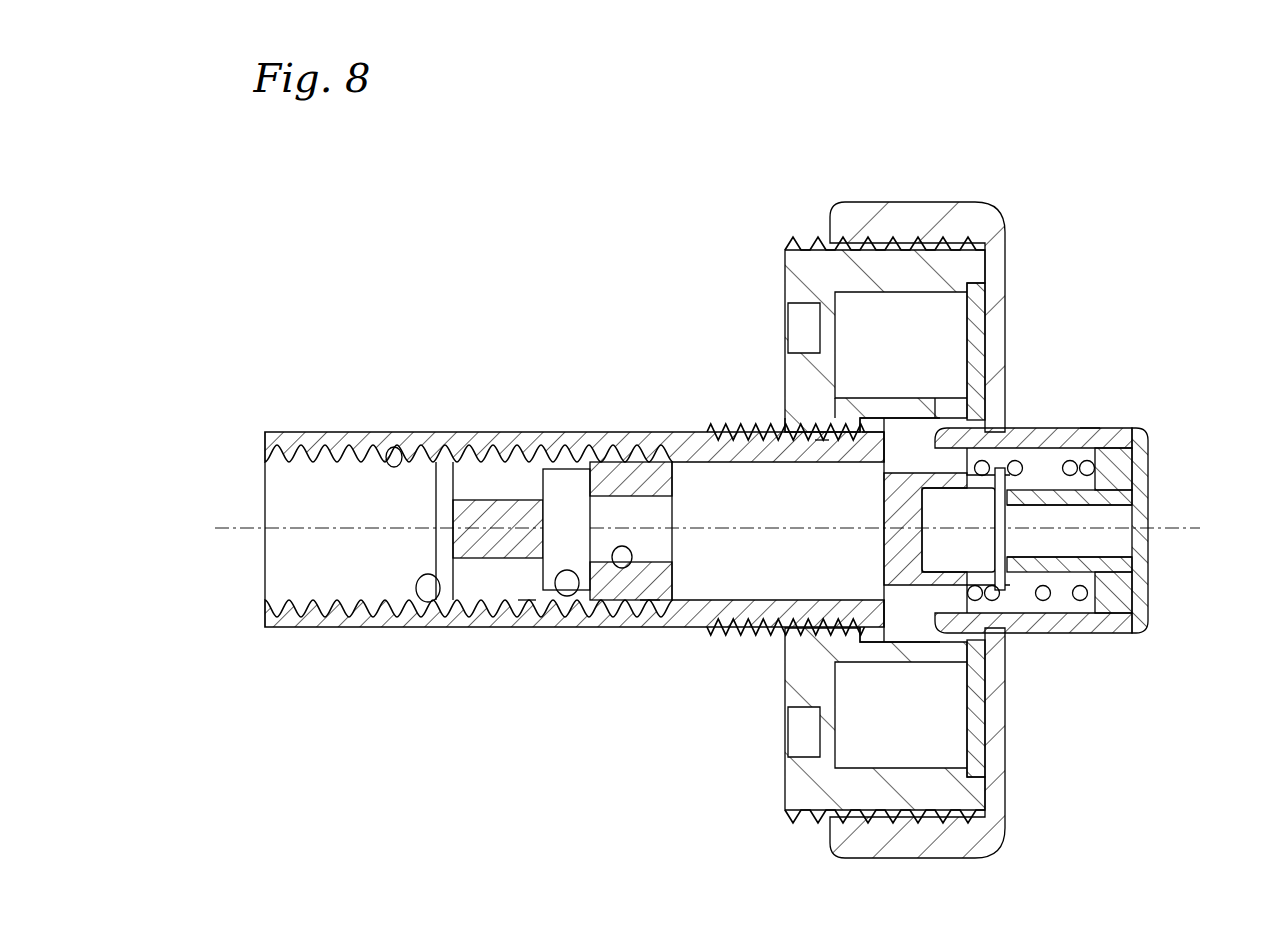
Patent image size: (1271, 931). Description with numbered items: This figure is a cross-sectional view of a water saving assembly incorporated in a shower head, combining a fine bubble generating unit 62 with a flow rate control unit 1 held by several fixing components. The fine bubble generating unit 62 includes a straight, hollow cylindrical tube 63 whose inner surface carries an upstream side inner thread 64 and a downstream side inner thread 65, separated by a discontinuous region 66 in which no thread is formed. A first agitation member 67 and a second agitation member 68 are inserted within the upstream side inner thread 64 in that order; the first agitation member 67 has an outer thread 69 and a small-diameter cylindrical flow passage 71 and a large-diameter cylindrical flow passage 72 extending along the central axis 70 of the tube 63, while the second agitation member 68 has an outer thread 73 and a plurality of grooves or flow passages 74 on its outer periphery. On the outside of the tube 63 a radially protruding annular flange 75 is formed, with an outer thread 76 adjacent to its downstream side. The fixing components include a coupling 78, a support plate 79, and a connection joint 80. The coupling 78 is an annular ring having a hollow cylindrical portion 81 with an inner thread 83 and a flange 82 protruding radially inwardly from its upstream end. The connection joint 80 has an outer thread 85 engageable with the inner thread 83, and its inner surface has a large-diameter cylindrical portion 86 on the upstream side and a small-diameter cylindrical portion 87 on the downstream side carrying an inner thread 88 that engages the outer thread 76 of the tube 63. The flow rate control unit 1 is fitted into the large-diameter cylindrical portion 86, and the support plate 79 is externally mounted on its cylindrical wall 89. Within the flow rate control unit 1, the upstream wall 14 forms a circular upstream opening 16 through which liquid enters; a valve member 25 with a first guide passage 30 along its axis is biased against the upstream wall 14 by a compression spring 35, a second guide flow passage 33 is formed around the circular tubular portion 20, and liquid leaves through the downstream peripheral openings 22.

The flow rate control unit 1 is at (1057, 542).
The upstream wall 14 is at (1138, 465).
The upstream opening 16 is at (1140, 570).
The circular tubular portion 20 is at (983, 577).
The downstream peripheral openings 22 is at (908, 632).
The valve member 25 is at (1130, 498).
The first guide passage 30 is at (1117, 545).
The second guide flow passage 33 is at (1002, 612).
The compression spring 35 is at (1072, 614).
The fine bubble generating unit 62 is at (557, 523).
The tube 63 is at (352, 432).
The upstream side inner thread 64 is at (708, 430).
The downstream side inner thread 65 is at (400, 448).
The discontinuous region 66 is at (417, 628).
The first agitation member 67 is at (627, 460).
The second agitation member 68 is at (493, 500).
The outer thread 69 is at (650, 620).
The central axis 70 is at (222, 523).
The small-diameter cylindrical flow passage 71 is at (615, 570).
The large-diameter cylindrical flow passage 72 is at (565, 624).
The outer thread 73 is at (526, 620).
The grooves or flow passages 74 is at (554, 533).
The annular flange 75 is at (870, 438).
The outer thread 76 is at (822, 447).
The coupling 78 is at (976, 265).
The support plate 79 is at (980, 338).
The connection joint 80 is at (840, 321).
The hollow cylindrical portion 81 is at (937, 200).
The flange 82 is at (1002, 260).
The inner thread 83 is at (880, 243).
The outer thread 85 is at (885, 257).
The large-diameter cylindrical portion 86 is at (935, 405).
The small-diameter cylindrical portion 87 is at (833, 405).
The inner thread 88 is at (785, 418).
The cylindrical wall 89 is at (1090, 427).